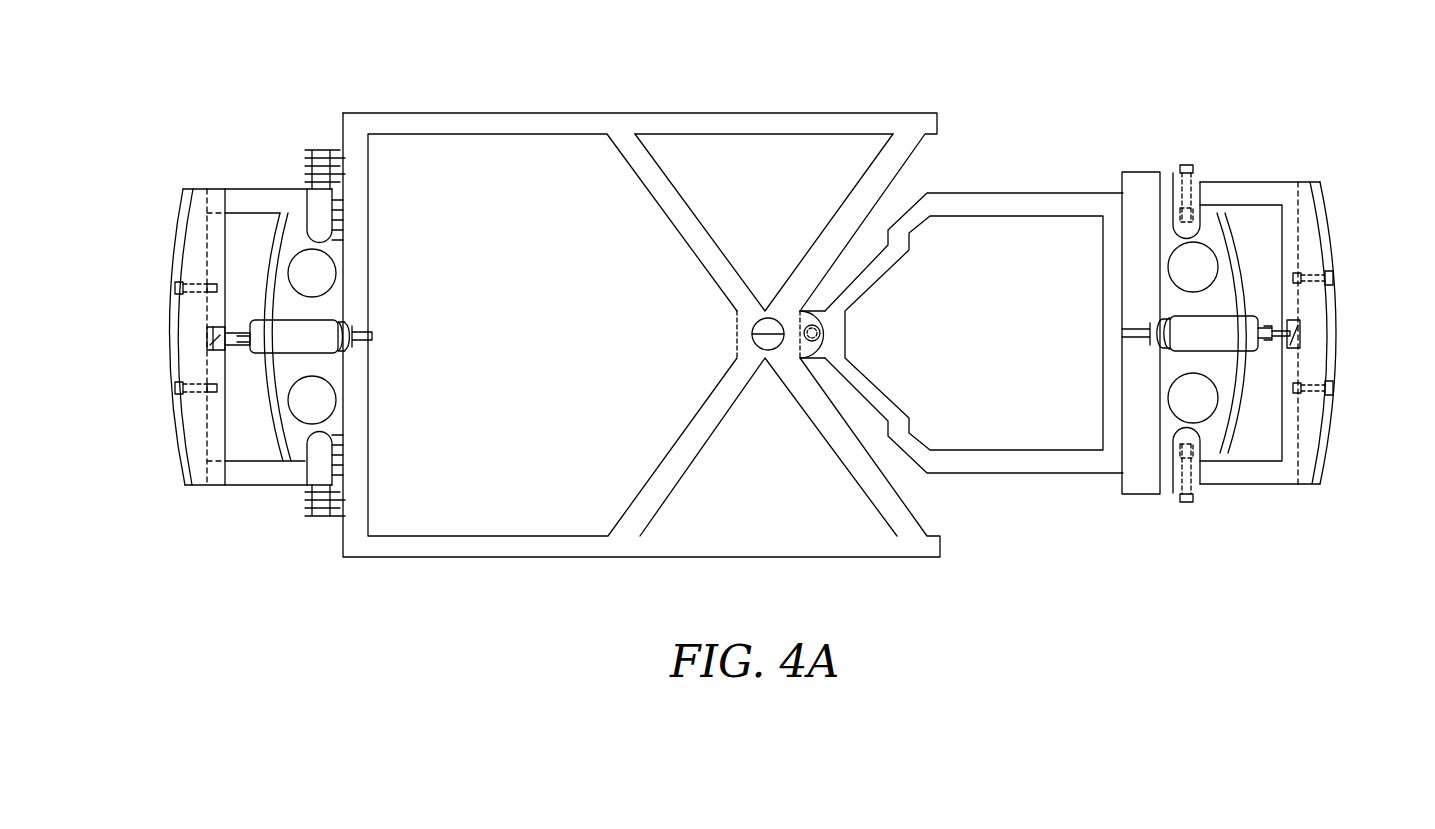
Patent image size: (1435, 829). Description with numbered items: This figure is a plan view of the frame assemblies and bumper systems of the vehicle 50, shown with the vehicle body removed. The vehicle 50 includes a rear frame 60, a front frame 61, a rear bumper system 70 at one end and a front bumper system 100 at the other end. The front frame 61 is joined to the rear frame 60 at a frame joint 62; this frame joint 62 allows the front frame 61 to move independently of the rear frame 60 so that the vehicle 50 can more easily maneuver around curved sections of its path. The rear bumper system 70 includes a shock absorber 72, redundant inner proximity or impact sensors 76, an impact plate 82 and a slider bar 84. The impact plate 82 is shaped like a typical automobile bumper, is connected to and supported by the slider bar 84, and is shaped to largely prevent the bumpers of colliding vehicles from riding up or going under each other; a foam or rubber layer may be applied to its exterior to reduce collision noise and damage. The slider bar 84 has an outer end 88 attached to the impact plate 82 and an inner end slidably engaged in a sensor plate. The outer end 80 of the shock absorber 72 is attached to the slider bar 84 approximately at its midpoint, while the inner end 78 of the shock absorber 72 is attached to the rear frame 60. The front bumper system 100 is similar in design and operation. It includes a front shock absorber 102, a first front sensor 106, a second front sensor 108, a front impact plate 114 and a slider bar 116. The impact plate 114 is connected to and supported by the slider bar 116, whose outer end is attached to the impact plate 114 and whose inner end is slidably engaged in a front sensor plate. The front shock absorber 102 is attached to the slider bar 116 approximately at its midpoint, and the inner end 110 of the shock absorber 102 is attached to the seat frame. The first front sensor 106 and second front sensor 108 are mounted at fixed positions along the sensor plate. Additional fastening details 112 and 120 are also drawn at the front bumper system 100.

The vehicle 50 is at (1149, 72).
The rear frame 60 is at (556, 117).
The front frame 61 is at (1035, 194).
The frame joint 62 is at (822, 333).
The rear bumper system 70 is at (168, 206).
The shock absorber 72 is at (322, 326).
The inner proximity or impact sensor 76 is at (240, 320).
The inner end of the shock absorber 78 is at (372, 337).
The outer end of the shock absorber 80 is at (226, 325).
The impact plate 82 is at (182, 472).
The slider bar 84 is at (227, 340).
The outer end of the slider bar 88 is at (207, 348).
The front bumper system 100 is at (1343, 188).
The front shock absorber 102 is at (1190, 316).
The first front sensor 106 is at (1258, 310).
The second front sensor 108 is at (1326, 280).
The inner end of the shock absorber 110 is at (1132, 331).
The lower fastener 112 is at (1326, 390).
The front impact plate 114 is at (1332, 452).
The slider bar 116 is at (1302, 323).
The bracket block 120 is at (1290, 352).